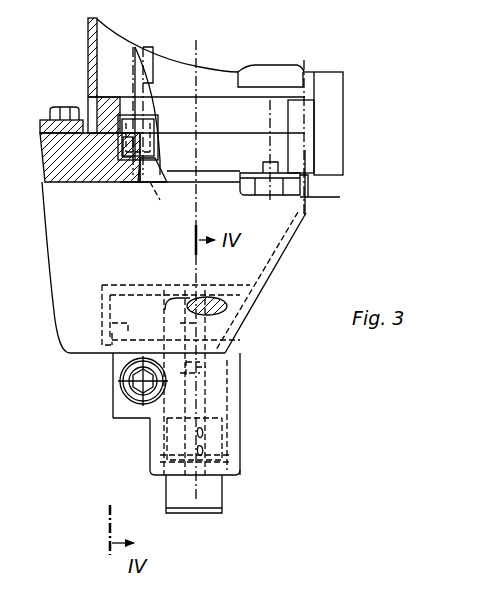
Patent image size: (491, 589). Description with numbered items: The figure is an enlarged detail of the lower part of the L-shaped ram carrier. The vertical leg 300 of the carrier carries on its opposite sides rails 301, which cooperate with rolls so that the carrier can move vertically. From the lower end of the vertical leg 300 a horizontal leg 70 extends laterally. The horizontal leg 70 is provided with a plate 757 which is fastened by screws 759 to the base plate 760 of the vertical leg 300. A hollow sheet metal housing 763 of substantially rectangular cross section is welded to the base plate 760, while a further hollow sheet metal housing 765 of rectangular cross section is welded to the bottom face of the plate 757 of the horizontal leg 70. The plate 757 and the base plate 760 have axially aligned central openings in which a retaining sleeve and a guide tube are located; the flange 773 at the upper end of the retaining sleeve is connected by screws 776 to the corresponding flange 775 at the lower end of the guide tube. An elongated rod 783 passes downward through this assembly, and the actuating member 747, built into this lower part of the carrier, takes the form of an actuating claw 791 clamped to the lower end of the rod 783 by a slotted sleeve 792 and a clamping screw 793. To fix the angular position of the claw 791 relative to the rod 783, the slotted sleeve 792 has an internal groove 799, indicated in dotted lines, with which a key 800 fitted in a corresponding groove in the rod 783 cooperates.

The vertical leg 300 is at (86, 50).
The hollow sheet metal housing 763 is at (92, 62).
The base plate 760 is at (105, 110).
The rails 301 is at (148, 70).
The flange 775 is at (126, 124).
The flange 773 is at (128, 144).
The screws 776 is at (166, 131).
The plate 757 is at (293, 162).
The screws 759 is at (340, 197).
The hollow sheet metal housing 765 is at (296, 232).
The horizontal leg 70 is at (282, 260).
The rod 783 is at (235, 305).
The actuating member 747 is at (255, 370).
The clamping screw 793 is at (130, 378).
The slotted sleeve 792 is at (133, 418).
The key 800 is at (230, 422).
The actuating claw 791 is at (245, 440).
The internal groove 799 is at (225, 457).